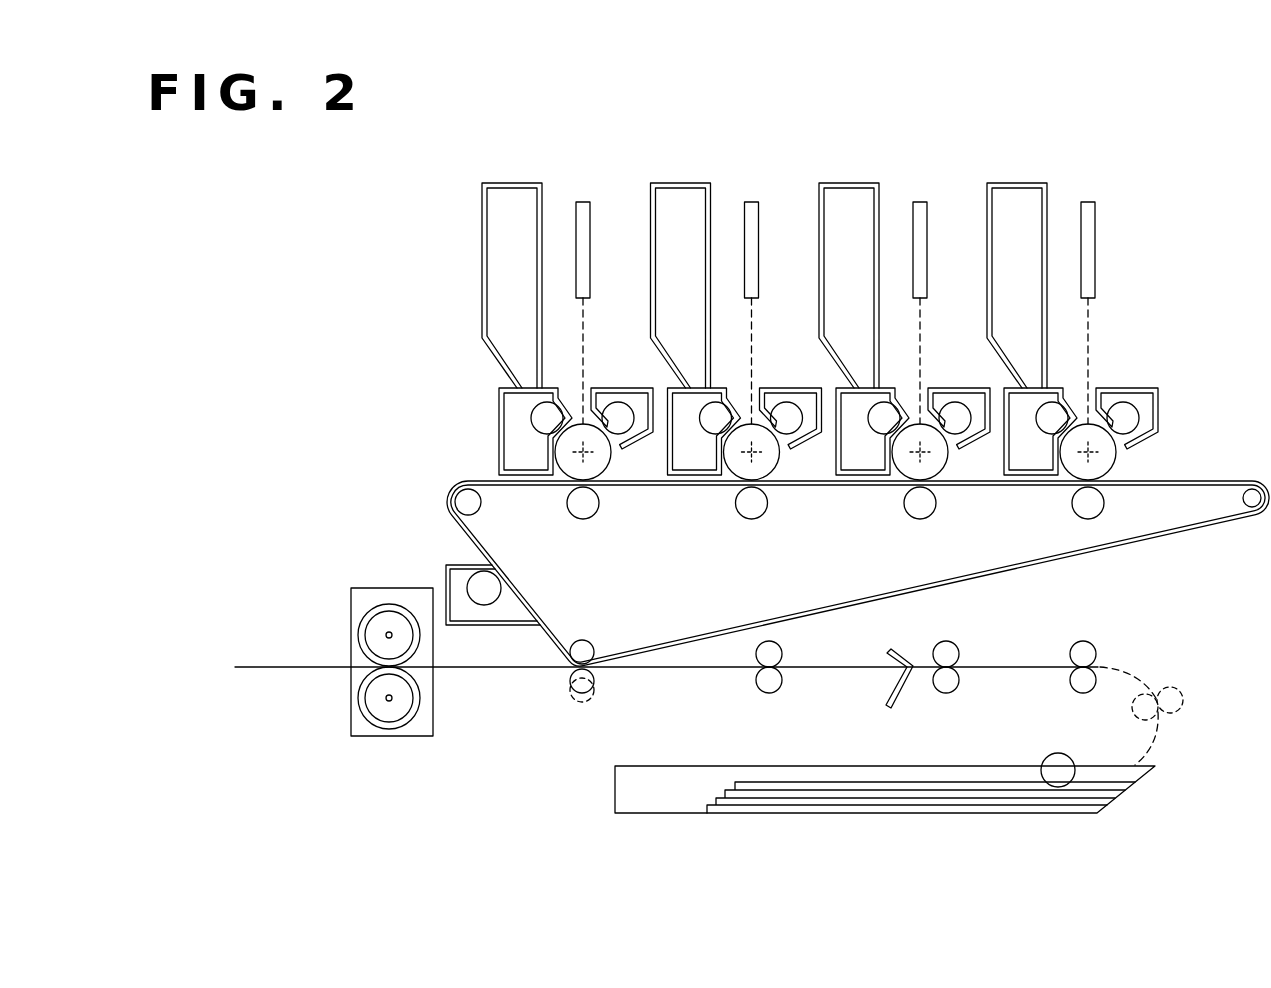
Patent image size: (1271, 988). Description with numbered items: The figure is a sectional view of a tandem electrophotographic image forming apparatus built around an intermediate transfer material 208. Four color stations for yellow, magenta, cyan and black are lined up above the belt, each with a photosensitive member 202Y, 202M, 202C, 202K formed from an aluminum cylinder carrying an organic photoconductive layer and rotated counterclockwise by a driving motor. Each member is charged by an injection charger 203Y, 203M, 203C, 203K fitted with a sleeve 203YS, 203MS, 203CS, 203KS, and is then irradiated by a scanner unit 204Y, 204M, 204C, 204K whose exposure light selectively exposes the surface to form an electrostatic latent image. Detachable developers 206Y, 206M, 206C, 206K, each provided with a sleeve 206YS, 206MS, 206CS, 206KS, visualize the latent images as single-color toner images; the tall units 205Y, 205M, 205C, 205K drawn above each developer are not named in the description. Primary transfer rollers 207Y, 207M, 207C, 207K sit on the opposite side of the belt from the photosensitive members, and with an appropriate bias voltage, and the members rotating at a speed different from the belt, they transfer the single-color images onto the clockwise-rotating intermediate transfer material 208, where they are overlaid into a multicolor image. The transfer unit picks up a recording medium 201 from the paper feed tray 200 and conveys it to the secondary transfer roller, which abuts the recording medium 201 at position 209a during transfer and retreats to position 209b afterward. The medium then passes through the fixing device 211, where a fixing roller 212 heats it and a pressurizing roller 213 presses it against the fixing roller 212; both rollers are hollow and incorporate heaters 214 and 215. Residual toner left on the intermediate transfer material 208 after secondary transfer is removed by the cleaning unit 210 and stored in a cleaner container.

The paper feed tray 200 is at (850, 766).
The recording medium 201 is at (985, 782).
The photosensitive member 202Y is at (600, 440).
The photosensitive member 202M is at (770, 440).
The photosensitive member 202C is at (937, 440).
The photosensitive member 202K is at (1105, 440).
The injection charger 203Y is at (645, 432).
The injection charger 203M is at (817, 443).
The injection charger 203C is at (985, 443).
The injection charger 203K is at (1153, 420).
The sleeve 203YS is at (618, 434).
The sleeve 203MS is at (788, 434).
The sleeve 203CS is at (956, 434).
The sleeve 203KS is at (1137, 408).
The scanner unit 204Y is at (583, 202).
The scanner unit 204M is at (754, 202).
The scanner unit 204C is at (922, 202).
The scanner unit 204K is at (1096, 212).
The toner hopper (yellow) 205Y is at (497, 183).
The toner hopper (magenta) 205M is at (665, 183).
The toner hopper (cyan) 205C is at (833, 183).
The toner hopper (black) 205K is at (1022, 183).
The developer 206Y is at (512, 455).
The developer 206M is at (700, 458).
The developer 206C is at (868, 458).
The developer 206K is at (1035, 458).
The sleeve 206YS is at (531, 418).
The sleeve 206MS is at (716, 402).
The sleeve 206CS is at (884, 402).
The sleeve 206KS is at (1052, 402).
The primary transfer roller 207Y is at (583, 519).
The primary transfer roller 207M is at (752, 519).
The primary transfer roller 207C is at (920, 519).
The primary transfer roller 207K is at (1088, 519).
The intermediate transfer material 208 is at (710, 637).
The position 209a is at (596, 684).
The position 209b is at (585, 703).
The cleaning unit 210 is at (457, 580).
The fixing device 211 is at (435, 727).
The fixing roller 212 is at (384, 606).
The pressurizing roller 213 is at (393, 727).
The heater 214 is at (388, 635).
The heater 215 is at (389, 700).